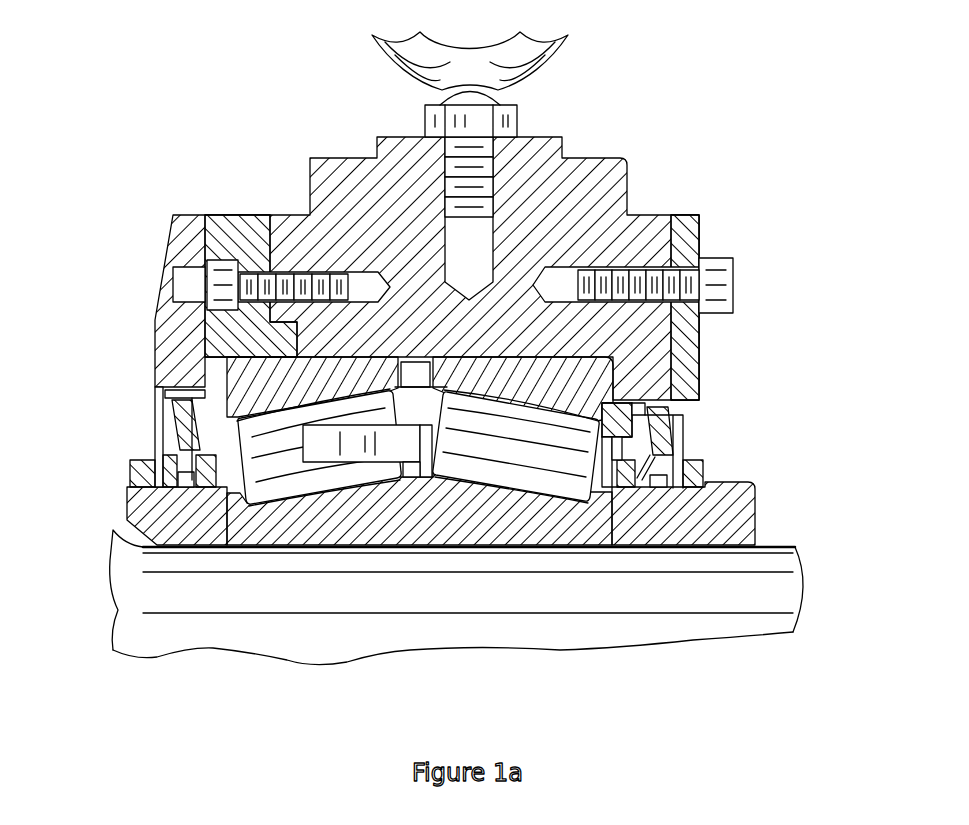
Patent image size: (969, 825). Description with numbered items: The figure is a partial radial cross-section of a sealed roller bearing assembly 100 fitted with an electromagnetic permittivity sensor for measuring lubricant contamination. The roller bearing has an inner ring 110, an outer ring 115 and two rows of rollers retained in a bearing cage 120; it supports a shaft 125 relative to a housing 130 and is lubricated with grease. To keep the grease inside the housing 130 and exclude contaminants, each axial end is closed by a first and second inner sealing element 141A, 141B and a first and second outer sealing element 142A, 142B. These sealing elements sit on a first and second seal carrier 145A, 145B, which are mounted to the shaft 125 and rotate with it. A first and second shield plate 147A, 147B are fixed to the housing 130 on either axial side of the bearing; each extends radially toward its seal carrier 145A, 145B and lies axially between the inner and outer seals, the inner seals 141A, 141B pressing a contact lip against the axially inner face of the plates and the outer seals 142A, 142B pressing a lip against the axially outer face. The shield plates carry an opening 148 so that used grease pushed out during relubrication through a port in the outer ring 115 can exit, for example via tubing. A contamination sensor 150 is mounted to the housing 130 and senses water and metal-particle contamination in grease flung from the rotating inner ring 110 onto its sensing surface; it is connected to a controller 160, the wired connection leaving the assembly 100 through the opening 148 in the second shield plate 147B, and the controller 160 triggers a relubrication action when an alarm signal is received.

The bearing assembly 100 is at (594, 132).
The inner ring 110 is at (413, 505).
The outer ring 115 is at (283, 388).
The bearing cage 120 is at (393, 443).
The shaft 125 is at (482, 623).
The housing 130 is at (600, 195).
The first inner sealing element 141A is at (228, 493).
The second inner sealing element 141B is at (695, 496).
The first outer sealing element 142A is at (138, 462).
The second outer sealing element 142B is at (702, 463).
The first seal carrier 145A is at (182, 515).
The second seal carrier 145B is at (727, 527).
The first shield plate 147A is at (145, 462).
The second shield plate 147B is at (670, 392).
The opening 148 is at (160, 410).
The contamination sensor 150 is at (607, 440).
The controller 160 is at (675, 417).